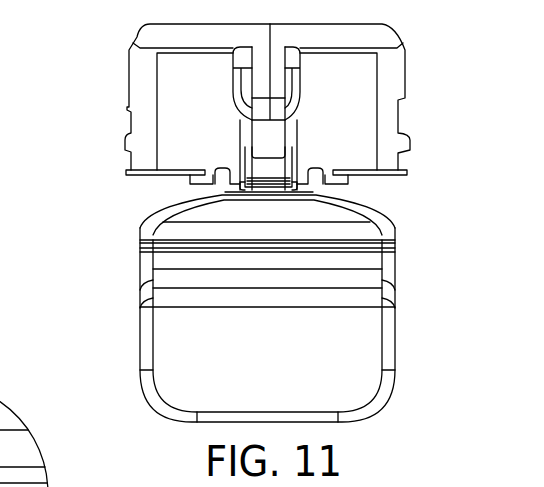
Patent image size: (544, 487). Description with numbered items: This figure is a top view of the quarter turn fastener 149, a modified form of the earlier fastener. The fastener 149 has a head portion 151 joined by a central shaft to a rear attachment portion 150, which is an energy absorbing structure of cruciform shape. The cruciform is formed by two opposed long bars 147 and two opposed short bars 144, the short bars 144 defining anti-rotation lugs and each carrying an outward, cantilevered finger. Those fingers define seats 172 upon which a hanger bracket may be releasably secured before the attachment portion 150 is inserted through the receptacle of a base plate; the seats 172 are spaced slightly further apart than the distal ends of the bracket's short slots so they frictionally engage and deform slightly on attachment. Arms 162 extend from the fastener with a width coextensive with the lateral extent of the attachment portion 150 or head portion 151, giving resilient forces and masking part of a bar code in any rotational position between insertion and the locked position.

The head portion 151 is at (116, 77).
The long bars 147 is at (147, 75).
The short bars 144 is at (243, 103).
The seats 172 is at (270, 167).
The fastener 149 is at (140, 198).
The arms 162 is at (188, 218).
The attachment portion 150 is at (122, 320).